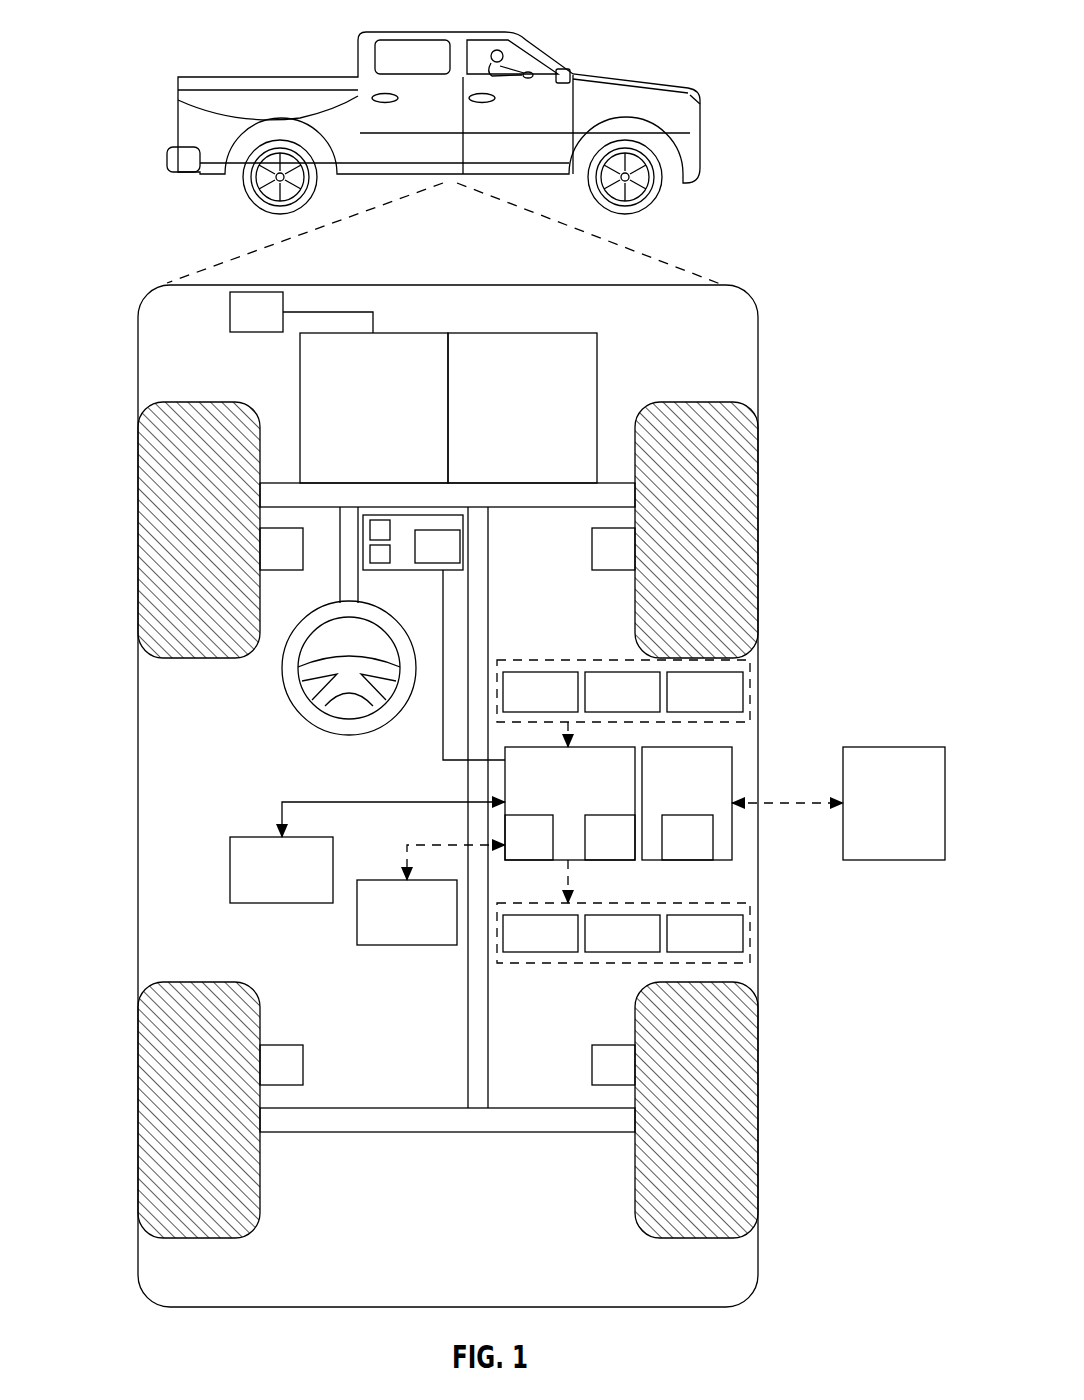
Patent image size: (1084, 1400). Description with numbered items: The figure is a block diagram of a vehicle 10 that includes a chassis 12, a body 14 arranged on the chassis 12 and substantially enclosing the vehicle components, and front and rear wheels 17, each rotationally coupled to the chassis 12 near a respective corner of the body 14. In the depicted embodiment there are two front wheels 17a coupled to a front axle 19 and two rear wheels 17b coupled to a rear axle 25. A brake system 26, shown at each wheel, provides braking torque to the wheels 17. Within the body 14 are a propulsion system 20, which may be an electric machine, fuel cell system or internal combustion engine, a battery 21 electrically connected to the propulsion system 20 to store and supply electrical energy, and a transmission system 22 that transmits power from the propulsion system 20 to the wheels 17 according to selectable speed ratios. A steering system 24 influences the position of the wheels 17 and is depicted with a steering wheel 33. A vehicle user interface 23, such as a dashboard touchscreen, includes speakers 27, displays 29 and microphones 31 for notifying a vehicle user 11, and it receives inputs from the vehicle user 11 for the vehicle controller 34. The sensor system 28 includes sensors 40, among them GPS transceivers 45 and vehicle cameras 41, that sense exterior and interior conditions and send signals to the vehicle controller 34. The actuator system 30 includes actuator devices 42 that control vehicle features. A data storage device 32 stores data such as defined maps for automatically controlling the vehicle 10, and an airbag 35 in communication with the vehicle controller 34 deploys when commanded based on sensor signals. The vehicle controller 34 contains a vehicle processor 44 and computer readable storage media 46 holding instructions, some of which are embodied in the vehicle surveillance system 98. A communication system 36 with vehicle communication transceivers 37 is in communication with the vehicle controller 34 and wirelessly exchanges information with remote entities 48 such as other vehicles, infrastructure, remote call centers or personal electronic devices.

The vehicle 10 is at (433, 107).
The vehicle user 11 is at (497, 50).
The chassis 12 is at (468, 980).
The body 14 is at (138, 758).
The wheels 17 is at (452, 806).
The front wheels 17a is at (163, 518).
The rear wheels 17b is at (163, 1108).
The front axle 19 is at (560, 508).
The propulsion system 20 is at (389, 419).
The battery 21 is at (255, 292).
The transmission system 22 is at (538, 419).
The vehicle user interface 23 is at (428, 515).
The steering system 24 is at (372, 529).
The rear axle 25 is at (525, 1108).
The brake system 26 is at (297, 563).
The speakers 27 is at (380, 520).
The sensor system 28 is at (623, 684).
The displays 29 is at (370, 557).
The actuator system 30 is at (623, 934).
The microphones 31 is at (453, 561).
The data storage device 32 is at (423, 925).
The steering wheel 33 is at (283, 682).
The vehicle controller 34 is at (570, 803).
The airbag 35 is at (297, 882).
The communication system 36 is at (687, 803).
The vehicle communication transceivers 37 is at (703, 850).
The sensors 40 is at (556, 704).
The vehicle cameras 41 is at (721, 704).
The actuator devices 42 is at (556, 946).
The vehicle processor 44 is at (545, 850).
The global positioning system transceivers 45 is at (638, 704).
The vehicle computer readable storage device or media 46 is at (626, 850).
The remote entities 48 is at (910, 815).
The vehicle surveillance system 98 is at (420, 782).